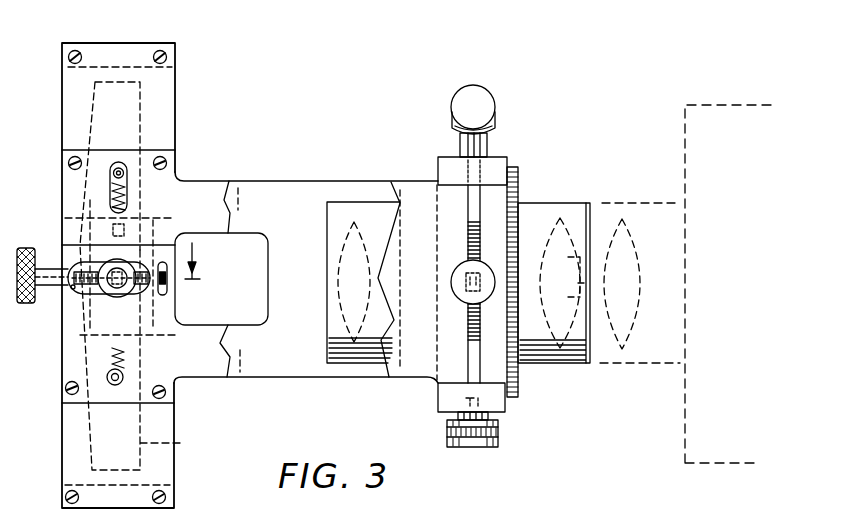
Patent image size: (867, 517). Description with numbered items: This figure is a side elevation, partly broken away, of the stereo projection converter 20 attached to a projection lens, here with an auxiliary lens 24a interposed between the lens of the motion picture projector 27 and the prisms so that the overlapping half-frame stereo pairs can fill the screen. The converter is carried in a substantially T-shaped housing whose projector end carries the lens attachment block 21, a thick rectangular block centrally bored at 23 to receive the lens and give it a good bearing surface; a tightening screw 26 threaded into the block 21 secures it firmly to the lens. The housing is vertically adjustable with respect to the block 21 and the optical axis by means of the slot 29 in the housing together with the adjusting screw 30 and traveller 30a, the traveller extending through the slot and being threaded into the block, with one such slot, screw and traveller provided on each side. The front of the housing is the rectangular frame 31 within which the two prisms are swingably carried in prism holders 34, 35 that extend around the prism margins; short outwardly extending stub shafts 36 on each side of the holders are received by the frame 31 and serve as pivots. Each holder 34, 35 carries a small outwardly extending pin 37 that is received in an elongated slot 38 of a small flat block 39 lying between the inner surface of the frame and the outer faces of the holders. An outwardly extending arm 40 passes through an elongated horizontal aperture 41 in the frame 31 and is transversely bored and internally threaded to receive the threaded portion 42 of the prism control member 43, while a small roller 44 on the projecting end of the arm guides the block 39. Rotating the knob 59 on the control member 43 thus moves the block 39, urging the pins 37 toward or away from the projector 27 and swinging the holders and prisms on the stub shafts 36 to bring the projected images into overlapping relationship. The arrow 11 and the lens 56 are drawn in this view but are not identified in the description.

The viewing window / direction arrow 11 is at (221, 279).
The stereo projection converter 20 is at (295, 162).
The lens attachment block 21 is at (452, 193).
The bore 23 is at (513, 168).
The auxiliary lens 24a is at (563, 210).
The tightening screw 26 is at (493, 112).
The motion picture projector 27 is at (688, 138).
The slot 29 is at (478, 257).
The adjusting screw 30 is at (467, 350).
The traveller 30a is at (453, 270).
The rectangular frame 31 is at (137, 57).
The prism holder 34 is at (135, 107).
The prism holder 35 is at (143, 357).
The stub shaft 36 is at (118, 163).
The pin 37 is at (135, 230).
The elongated slot 38 is at (133, 242).
The flat block 39 is at (175, 215).
The arm 40 is at (130, 283).
The horizontal aperture 41 is at (72, 289).
The threaded portion 42 is at (72, 267).
The prism control member 43 is at (52, 283).
The roller 44 is at (107, 290).
The lens 56 is at (652, 197).
The knob 59 is at (27, 247).